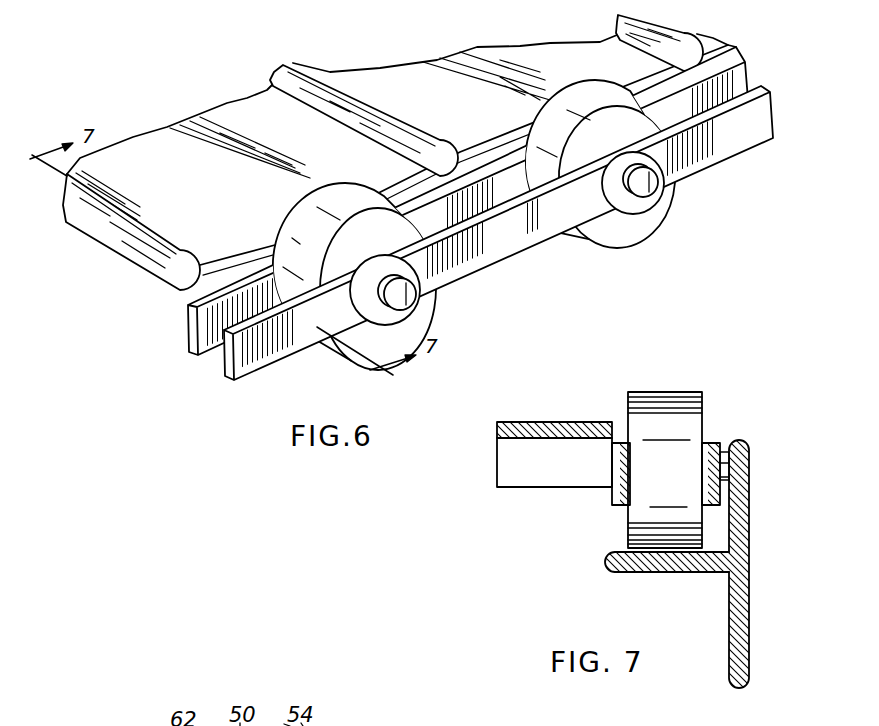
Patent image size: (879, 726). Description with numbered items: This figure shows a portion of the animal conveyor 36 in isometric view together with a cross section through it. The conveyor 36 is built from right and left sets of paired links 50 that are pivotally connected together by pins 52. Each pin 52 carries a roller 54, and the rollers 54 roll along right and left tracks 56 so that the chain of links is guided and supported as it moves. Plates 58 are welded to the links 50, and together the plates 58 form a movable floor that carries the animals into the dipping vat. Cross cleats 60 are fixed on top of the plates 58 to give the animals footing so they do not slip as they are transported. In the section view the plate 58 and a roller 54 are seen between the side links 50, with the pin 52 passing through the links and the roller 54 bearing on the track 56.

In FIG. 6, the conveyor 36 is at (257, 73).
In FIG. 6, the paired links 50 is at (229, 379).
In FIG. 7, the paired links 50 is at (627, 505).
In FIG. 6, the pins 52 is at (417, 310).
In FIG. 7, the pins 52 is at (726, 451).
In FIG. 6, the rollers 54 is at (323, 242).
In FIG. 7, the rollers 54 is at (678, 476).
In FIG. 7, the tracks 56 is at (678, 573).
In FIG. 6, the plates 58 is at (254, 194).
In FIG. 7, the plates 58 is at (568, 431).
In FIG. 6, the cross cleats 60 is at (367, 112).